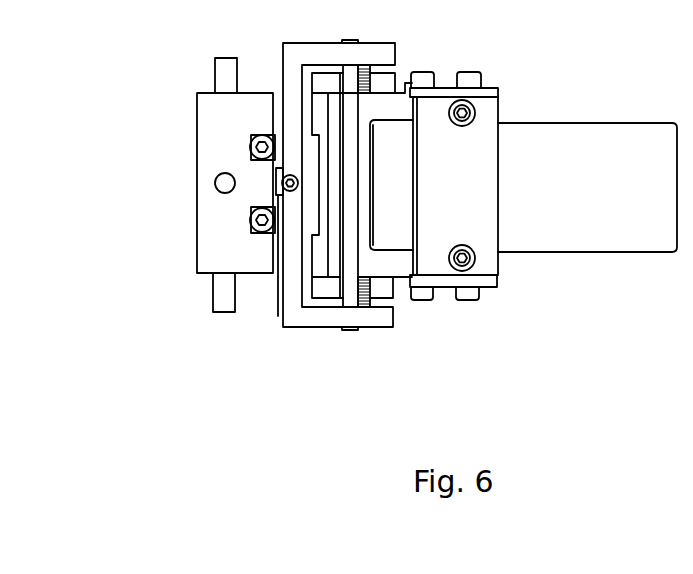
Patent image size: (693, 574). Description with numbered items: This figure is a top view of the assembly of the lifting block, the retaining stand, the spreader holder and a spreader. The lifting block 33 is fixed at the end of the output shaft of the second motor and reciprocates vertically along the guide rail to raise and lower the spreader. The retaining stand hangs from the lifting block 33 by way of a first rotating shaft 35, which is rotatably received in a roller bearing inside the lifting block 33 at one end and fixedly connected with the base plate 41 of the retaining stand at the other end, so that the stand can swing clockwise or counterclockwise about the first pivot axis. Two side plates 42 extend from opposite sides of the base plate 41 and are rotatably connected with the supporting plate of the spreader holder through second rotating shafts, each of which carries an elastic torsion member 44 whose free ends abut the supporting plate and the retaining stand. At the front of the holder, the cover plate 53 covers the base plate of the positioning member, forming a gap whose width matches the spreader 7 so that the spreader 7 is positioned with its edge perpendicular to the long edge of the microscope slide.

The spreader 7 is at (575, 192).
The lifting block 33 is at (223, 225).
The first rotating shaft 35 is at (276, 182).
The base plate 41 is at (292, 267).
The side plates 42 is at (320, 310).
The elastic torsion member 44 is at (363, 307).
The cover plate 53 is at (452, 210).